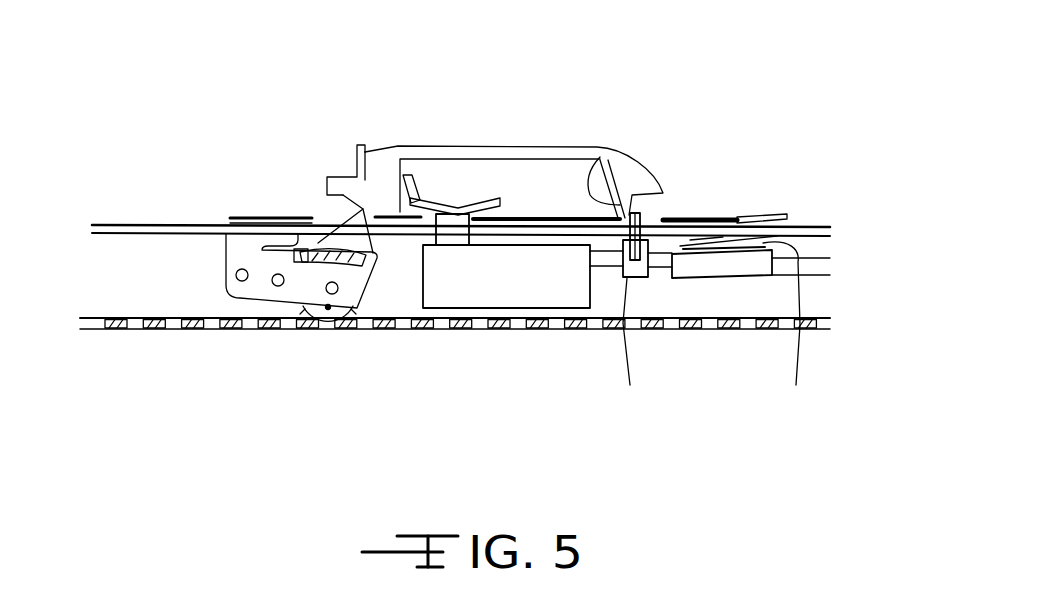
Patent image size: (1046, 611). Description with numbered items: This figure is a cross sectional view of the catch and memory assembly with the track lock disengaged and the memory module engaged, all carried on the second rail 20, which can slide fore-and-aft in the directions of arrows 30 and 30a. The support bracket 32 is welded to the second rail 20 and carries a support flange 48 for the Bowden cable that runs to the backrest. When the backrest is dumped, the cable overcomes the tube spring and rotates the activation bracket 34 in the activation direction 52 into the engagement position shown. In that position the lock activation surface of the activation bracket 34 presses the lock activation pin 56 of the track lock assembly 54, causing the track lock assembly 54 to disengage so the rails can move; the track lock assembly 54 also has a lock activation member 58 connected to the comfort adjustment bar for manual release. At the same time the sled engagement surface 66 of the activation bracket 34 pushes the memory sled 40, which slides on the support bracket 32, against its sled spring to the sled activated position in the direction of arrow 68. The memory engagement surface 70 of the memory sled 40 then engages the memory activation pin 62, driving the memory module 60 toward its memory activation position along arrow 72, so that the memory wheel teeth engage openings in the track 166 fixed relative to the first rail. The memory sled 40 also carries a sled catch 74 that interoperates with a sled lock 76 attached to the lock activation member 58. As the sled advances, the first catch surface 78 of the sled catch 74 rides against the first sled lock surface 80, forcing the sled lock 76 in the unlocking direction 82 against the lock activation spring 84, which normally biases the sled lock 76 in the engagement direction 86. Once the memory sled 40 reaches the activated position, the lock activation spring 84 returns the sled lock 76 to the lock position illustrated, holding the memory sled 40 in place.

The second rail 20 is at (100, 222).
The arrow (direction of rail movement) 30 is at (552, 65).
The arrow (opposite direction of rail movement) 30a is at (402, 65).
The support bracket 32 is at (705, 213).
The activation bracket 34 is at (487, 202).
The memory sled 40 is at (500, 150).
The support flange 48 is at (355, 158).
The activation direction (arrow) 52 is at (460, 195).
The track lock assembly 54 is at (476, 285).
The lock activation pin 56 is at (452, 230).
The lock activation member 58 is at (680, 278).
The memory module 60 is at (237, 205).
The memory activation pin 62 is at (314, 225).
The sled engagement surface 66 is at (408, 175).
The arrow (sled activation direction) 68 is at (442, 126).
The memory engagement surface 70 is at (340, 230).
The arrow (memory activation direction) 72 is at (288, 265).
The sled catch 74 is at (626, 205).
The sled lock 76 is at (632, 344).
The first catch surface 78 is at (600, 157).
The first sled lock surface 80 is at (641, 213).
The unlocking direction (arrow) 82 is at (634, 278).
The lock activation spring 84 is at (785, 326).
The engagement direction (arrow) 86 is at (727, 262).
The track 166 is at (150, 332).